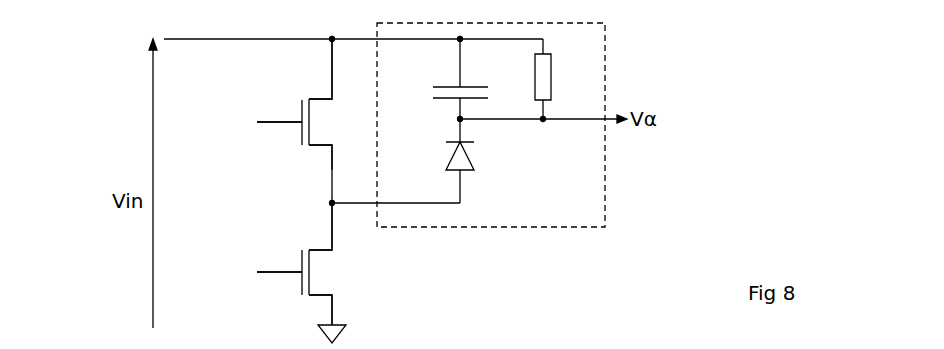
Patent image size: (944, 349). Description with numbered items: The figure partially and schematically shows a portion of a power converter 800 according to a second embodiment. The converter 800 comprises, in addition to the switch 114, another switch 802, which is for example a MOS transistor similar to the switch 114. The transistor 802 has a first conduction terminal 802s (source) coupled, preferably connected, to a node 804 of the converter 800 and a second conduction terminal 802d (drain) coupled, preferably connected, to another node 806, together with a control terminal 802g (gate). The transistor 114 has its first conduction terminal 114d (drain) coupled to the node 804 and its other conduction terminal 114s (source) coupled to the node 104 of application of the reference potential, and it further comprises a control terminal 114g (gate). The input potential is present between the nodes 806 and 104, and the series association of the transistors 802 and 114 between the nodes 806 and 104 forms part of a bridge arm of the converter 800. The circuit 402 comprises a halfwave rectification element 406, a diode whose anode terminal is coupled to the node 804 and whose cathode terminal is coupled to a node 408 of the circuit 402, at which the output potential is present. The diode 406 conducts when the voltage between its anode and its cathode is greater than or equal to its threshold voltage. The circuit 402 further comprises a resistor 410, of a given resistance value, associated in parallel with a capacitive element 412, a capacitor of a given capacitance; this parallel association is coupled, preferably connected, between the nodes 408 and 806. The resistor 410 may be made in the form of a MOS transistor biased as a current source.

The power converter 800 is at (665, 65).
The node 806 is at (332, 39).
The switch 802 is at (290, 99).
The second conduction terminal 802d is at (332, 75).
The control terminal 802g is at (257, 122).
The first conduction terminal 802s is at (332, 152).
The node 804 is at (332, 203).
The switch 114 is at (333, 268).
The first conduction terminal 114d is at (332, 236).
The control terminal 114g is at (257, 272).
The conduction terminal 114s is at (332, 305).
The node 104 is at (344, 333).
The circuit 402 is at (605, 192).
The capacitive element 412 is at (437, 108).
The node 408 is at (543, 121).
The resistor 410 is at (551, 65).
The halfwave rectification element 406 is at (470, 160).